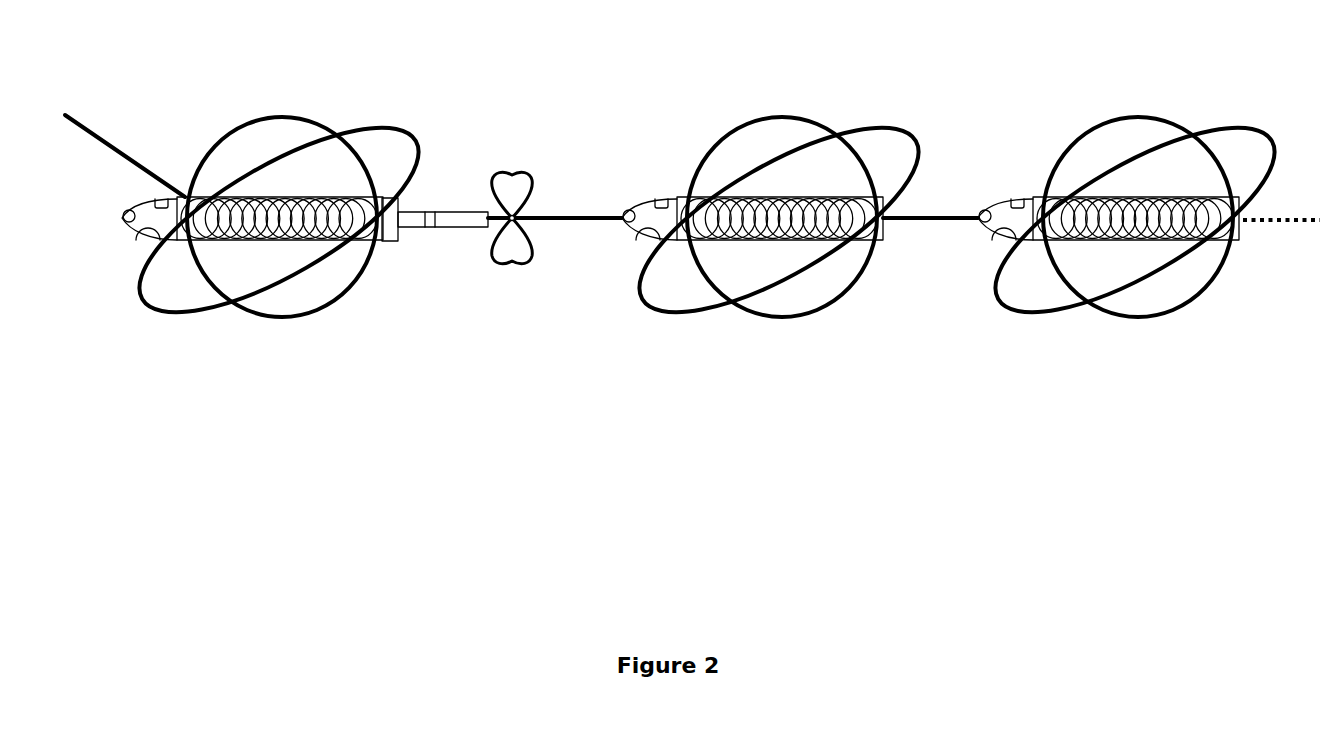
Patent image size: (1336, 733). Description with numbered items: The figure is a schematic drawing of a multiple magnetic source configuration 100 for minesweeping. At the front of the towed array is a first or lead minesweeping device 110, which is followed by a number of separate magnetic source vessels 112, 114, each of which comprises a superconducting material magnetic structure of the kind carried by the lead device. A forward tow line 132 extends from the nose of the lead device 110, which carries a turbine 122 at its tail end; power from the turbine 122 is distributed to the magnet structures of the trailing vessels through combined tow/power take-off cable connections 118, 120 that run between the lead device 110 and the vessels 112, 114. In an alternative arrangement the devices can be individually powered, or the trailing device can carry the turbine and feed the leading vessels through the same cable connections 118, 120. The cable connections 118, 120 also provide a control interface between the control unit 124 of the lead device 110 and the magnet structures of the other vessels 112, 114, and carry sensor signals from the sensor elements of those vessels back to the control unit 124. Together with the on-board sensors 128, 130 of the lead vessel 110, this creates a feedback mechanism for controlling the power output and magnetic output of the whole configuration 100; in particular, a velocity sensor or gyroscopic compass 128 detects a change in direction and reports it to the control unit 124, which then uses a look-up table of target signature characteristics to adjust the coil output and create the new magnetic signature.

The multiple magnetic source configuration 100 is at (692, 302).
The lead minesweeping device 110 is at (299, 226).
The magnetic source vessel 112 is at (768, 231).
The magnetic source vessel 114 is at (1145, 229).
The tow/power take-off cable connection 118 is at (578, 216).
The tow/power take-off cable connection 120 is at (937, 224).
The turbine 122 is at (465, 185).
The control unit 124 is at (390, 225).
The velocity sensor or gyroscopic compass 128 is at (121, 216).
The on-board sensor 130 is at (432, 228).
The tow line 132 is at (102, 122).